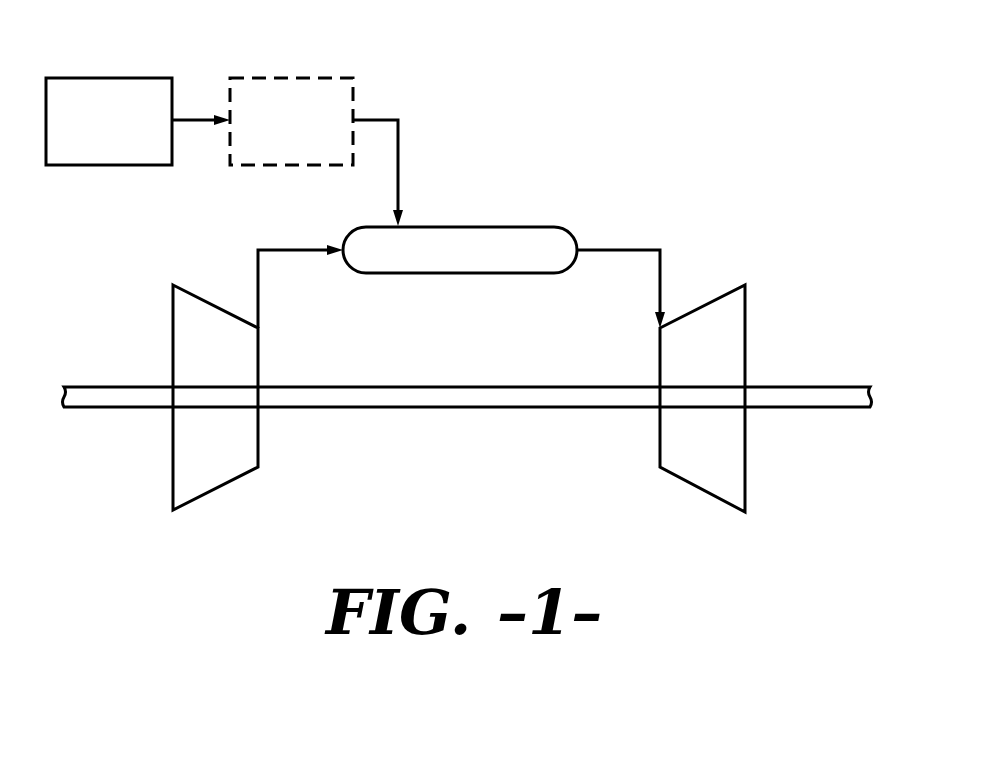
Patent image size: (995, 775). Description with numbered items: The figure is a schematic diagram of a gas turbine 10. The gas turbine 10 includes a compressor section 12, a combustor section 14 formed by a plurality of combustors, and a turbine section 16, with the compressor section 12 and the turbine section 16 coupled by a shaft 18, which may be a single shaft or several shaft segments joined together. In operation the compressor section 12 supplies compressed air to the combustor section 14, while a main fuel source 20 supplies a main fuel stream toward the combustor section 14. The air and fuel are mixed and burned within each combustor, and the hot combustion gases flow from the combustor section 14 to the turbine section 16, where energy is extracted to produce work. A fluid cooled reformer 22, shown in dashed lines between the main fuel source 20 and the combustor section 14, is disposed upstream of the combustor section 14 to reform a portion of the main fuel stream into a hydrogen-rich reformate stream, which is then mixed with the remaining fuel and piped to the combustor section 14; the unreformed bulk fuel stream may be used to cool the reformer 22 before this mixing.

The gas turbine 10 is at (728, 49).
The compressor section 12 is at (172, 308).
The combustor section 14 is at (503, 225).
The turbine section 16 is at (745, 308).
The shaft 18 is at (408, 408).
The main fuel source 20 is at (103, 78).
The fluid cooled reformer 22 is at (293, 77).